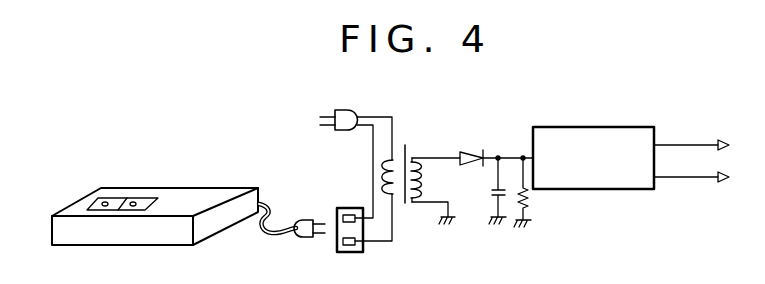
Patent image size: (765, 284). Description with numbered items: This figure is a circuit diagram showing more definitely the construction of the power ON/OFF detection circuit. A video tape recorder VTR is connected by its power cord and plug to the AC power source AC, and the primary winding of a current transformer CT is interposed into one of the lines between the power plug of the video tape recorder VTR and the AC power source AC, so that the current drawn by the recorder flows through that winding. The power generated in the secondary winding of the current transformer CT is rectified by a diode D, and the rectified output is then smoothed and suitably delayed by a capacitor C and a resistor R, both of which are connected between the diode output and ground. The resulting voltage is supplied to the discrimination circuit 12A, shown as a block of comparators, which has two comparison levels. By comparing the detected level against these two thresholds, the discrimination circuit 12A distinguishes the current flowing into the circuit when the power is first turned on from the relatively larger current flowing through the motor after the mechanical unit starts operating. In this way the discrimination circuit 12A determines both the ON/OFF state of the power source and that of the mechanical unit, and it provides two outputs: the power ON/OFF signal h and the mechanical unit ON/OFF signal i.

The video tape recorder VTR is at (170, 193).
The AC power source AC is at (302, 120).
The current transformer CT is at (407, 145).
The diode D is at (468, 148).
The capacitor C is at (490, 193).
The resistor R is at (530, 197).
The discrimination circuit 12A is at (598, 133).
The power ON/OFF signal h is at (691, 138).
The mechanical unit ON/OFF signal i is at (691, 169).